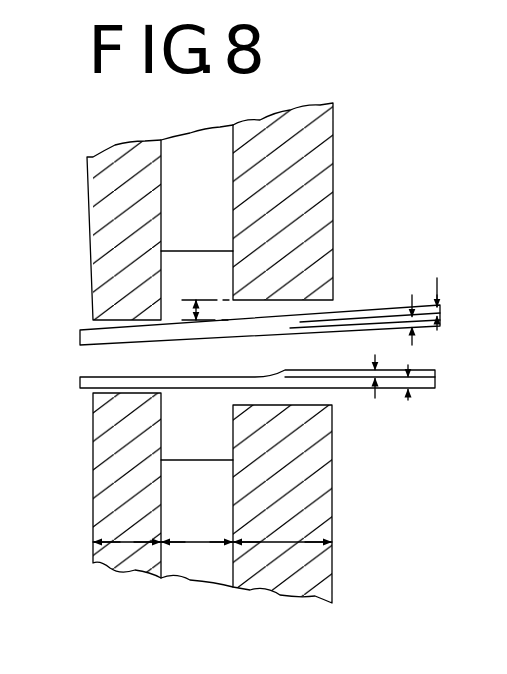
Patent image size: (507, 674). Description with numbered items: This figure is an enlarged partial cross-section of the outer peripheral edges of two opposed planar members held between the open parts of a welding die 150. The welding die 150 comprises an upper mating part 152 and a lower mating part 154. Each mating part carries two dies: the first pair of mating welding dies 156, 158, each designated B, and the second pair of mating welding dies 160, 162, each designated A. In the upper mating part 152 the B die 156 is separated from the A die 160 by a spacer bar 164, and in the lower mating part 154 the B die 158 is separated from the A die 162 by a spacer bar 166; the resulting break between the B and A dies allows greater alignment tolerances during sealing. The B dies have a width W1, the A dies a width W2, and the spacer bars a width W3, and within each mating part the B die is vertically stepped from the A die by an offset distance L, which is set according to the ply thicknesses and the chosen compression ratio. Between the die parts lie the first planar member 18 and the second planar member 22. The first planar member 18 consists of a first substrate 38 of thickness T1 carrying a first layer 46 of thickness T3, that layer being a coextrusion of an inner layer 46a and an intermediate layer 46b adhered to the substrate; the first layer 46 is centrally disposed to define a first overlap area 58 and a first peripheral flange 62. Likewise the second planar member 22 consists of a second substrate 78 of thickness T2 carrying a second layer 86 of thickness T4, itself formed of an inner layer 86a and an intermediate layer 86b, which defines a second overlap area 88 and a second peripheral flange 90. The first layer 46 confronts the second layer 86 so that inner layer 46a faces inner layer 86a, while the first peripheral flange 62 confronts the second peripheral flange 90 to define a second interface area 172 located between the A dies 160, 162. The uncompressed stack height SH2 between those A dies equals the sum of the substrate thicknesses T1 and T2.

The spacer bar 164 is at (203, 132).
The first pair welding die (B) 156 is at (333, 128).
The mating part 152 is at (93, 192).
The second pair welding die (A) 160 is at (93, 216).
The welding die 150 is at (74, 289).
The first peripheral flange 62 is at (240, 320).
The first overlap area 58 is at (352, 321).
The first planar member 18 is at (385, 305).
The first substrate 38 is at (443, 306).
The first layer 46 is at (444, 318).
The inner layer 46a is at (302, 334).
The intermediate layer 46b is at (290, 329).
The second layer 86 is at (440, 380).
The inner layer 86a is at (262, 372).
The intermediate layer 86b is at (205, 376).
The second substrate 78 is at (440, 389).
The second overlap area 88 is at (354, 389).
The second planar member 22 is at (344, 392).
The second peripheral flange 90 is at (191, 392).
The spacer bar 166 is at (173, 565).
The second pair welding die (A) 162 is at (93, 452).
The mating part 154 is at (93, 492).
The first pair welding die (B) 158 is at (332, 486).
The second interface area 172 is at (506, 548).
The stack height SH2 is at (506, 495).
The offset distance L is at (197, 297).
The thickness of first substrate T1 is at (437, 290).
The thickness of second substrate T2 is at (408, 398).
The thickness of first layer T3 is at (413, 340).
The thickness of second layer T4 is at (375, 360).
The width of first pair of dies W1 is at (297, 542).
The width of second pair of dies W2 is at (120, 540).
The width of spacer bars W3 is at (196, 540).